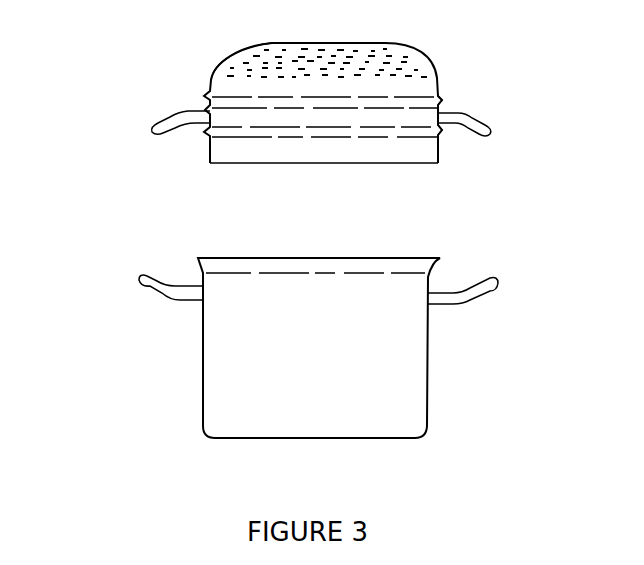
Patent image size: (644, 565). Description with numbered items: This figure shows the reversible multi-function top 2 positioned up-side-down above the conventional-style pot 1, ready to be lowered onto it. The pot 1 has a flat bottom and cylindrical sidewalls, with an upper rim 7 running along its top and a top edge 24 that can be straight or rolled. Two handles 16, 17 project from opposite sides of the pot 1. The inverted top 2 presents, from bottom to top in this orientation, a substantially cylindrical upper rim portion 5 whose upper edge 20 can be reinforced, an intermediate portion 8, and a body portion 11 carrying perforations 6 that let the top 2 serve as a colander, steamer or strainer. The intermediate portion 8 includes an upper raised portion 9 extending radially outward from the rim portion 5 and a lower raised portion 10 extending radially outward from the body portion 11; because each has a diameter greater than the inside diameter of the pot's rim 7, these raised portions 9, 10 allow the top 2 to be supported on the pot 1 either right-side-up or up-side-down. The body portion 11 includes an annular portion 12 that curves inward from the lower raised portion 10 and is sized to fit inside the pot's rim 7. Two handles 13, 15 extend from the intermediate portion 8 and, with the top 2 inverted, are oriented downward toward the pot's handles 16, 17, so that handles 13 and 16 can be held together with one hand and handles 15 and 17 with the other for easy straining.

The pot 1 is at (178, 345).
The top 2 is at (478, 55).
The upper rim portion 5 is at (339, 153).
The perforations 6 is at (398, 58).
The upper rim 7 is at (401, 268).
The intermediate portion 8 is at (230, 117).
The upper raised portion 9 is at (424, 135).
The lower raised portion 10 is at (441, 103).
The body portion 11 is at (271, 37).
The annular portion 12 is at (209, 78).
The handle 13 is at (493, 129).
The handle 15 is at (162, 125).
The handle 16 is at (498, 290).
The handle 17 is at (152, 287).
The upper edge 20 is at (302, 164).
The top edge 24 is at (320, 258).